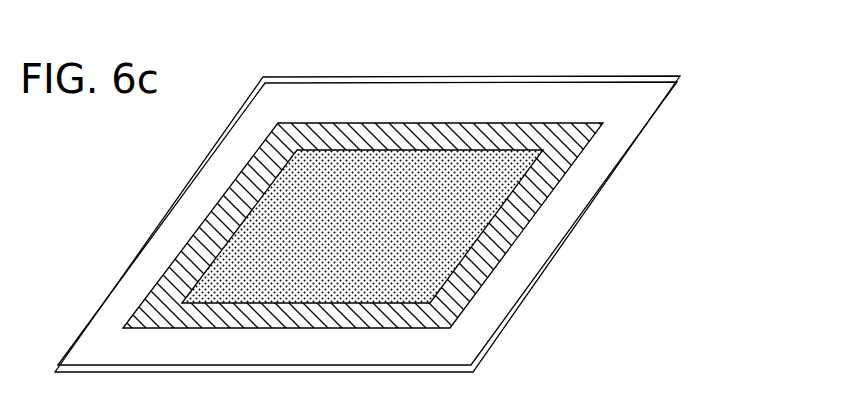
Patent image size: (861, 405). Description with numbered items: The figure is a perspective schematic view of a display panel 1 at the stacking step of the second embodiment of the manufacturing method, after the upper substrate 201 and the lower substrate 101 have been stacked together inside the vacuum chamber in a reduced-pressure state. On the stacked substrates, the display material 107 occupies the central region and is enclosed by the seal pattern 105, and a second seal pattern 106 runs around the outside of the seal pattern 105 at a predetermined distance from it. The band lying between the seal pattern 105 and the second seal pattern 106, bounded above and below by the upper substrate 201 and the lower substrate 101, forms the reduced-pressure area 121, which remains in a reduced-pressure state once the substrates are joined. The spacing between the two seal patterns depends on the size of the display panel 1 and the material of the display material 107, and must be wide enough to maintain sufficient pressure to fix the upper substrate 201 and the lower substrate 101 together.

The display panel 1 is at (735, 97).
The lower substrate 101 is at (636, 140).
The upper substrate 201 is at (648, 76).
The reduced-pressure area 121 is at (436, 138).
The seal pattern 105 is at (516, 190).
The second seal pattern 106 is at (518, 237).
The display material 107 is at (395, 278).